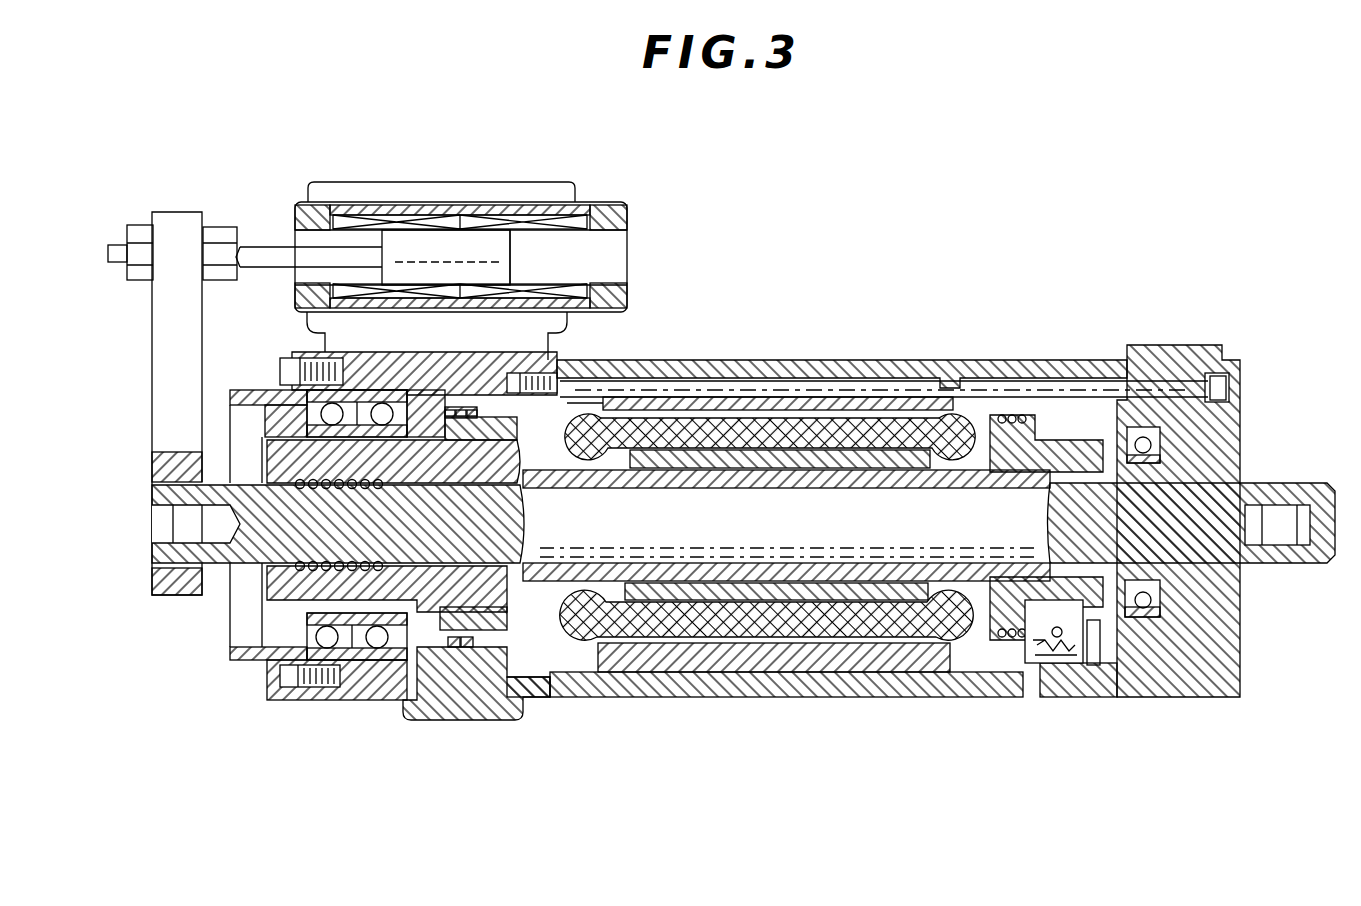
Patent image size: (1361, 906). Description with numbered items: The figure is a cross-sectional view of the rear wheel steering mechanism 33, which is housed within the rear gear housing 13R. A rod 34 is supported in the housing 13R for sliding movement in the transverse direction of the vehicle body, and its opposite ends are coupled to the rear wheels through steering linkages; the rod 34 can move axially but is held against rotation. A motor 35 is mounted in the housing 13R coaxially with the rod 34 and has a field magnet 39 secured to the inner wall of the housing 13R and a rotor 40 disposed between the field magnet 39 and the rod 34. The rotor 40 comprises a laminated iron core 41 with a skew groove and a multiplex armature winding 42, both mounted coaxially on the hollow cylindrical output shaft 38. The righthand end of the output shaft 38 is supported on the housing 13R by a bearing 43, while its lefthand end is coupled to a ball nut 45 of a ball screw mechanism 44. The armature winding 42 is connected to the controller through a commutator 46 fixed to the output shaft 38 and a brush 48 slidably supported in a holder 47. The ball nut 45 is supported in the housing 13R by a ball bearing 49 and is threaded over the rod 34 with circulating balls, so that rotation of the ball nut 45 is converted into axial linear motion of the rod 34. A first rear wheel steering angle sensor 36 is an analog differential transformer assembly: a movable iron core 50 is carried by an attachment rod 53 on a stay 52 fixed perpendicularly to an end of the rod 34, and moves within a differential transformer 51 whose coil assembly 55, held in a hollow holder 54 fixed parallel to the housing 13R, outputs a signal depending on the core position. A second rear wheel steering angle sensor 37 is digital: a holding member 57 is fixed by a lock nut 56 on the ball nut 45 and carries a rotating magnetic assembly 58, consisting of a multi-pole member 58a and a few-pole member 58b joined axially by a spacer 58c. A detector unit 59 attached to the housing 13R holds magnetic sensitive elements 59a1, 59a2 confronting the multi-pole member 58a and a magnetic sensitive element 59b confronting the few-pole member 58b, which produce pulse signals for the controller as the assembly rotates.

The rear wheel steering mechanism 33 is at (665, 722).
The rod 34 is at (1290, 492).
The motor 35 is at (968, 406).
The first rear wheel steering angle sensor 36 is at (302, 158).
The second rear wheel steering angle sensor 37 is at (408, 742).
The output shaft 38 is at (568, 475).
The field magnet 39 is at (755, 661).
The rotor 40 is at (594, 592).
The laminated iron core 41 is at (742, 584).
The multiplex armature winding 42 is at (880, 620).
The bearing 43 is at (1150, 446).
The ball screw mechanism 44 is at (284, 521).
The ball nut 45 is at (436, 444).
The commutator 46 is at (1018, 460).
The holder 47 is at (1040, 666).
The brush 48 is at (1078, 625).
The ball bearing 49 is at (372, 642).
The movable iron core 50 is at (490, 258).
The differential transformer 51 is at (580, 205).
The stay 52 is at (175, 329).
The attachment rod 53 is at (280, 250).
The hollow holder 54 is at (440, 215).
The coil assembly 55 is at (400, 210).
The lock nut 56 is at (510, 590).
The holding member 57 is at (517, 432).
The rotating magnetic assembly 58 is at (470, 441).
The multi-pole member 58a is at (452, 410).
The few-pole member 58b is at (472, 410).
The spacer 58c is at (462, 410).
The detector unit 59 is at (477, 695).
The magnetic sensitive element 59a1 is at (447, 648).
The magnetic sensitive element 59a2 is at (516, 726).
The magnetic sensitive element 59b is at (527, 698).
The rear gear housing 13R is at (865, 691).